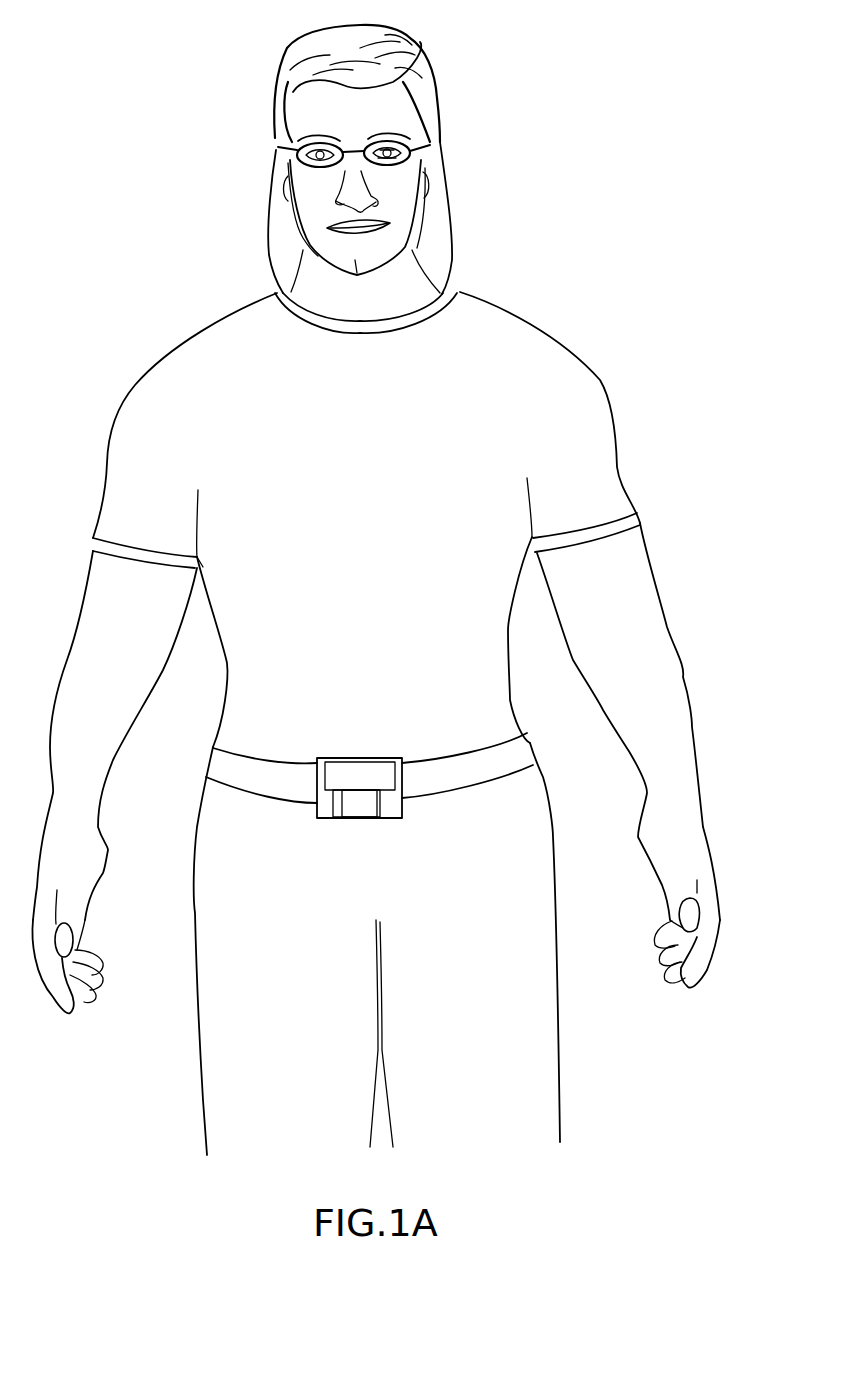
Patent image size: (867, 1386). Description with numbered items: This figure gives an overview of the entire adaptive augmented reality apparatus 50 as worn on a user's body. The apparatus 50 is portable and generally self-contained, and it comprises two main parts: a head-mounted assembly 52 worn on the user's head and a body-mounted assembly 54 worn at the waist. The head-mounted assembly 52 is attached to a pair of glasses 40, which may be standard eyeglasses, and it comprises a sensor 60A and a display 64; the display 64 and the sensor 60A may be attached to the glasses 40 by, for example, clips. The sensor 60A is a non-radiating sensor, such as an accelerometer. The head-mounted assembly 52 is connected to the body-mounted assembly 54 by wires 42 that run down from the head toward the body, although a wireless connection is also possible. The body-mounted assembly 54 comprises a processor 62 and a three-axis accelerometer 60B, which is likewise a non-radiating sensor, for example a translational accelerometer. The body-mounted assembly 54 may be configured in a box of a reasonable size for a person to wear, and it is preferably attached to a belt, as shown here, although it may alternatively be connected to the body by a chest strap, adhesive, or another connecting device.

The adaptive augmented reality apparatus 50 is at (613, 212).
The head-mounted assembly 52 is at (457, 108).
The glasses 40 is at (423, 150).
The wires 42 is at (268, 248).
The sensor 60A is at (296, 148).
The 3-axis accelerometer 60B is at (358, 820).
The display 64 is at (390, 163).
The processor 62 is at (363, 758).
The body-mounted assembly 54 is at (377, 748).